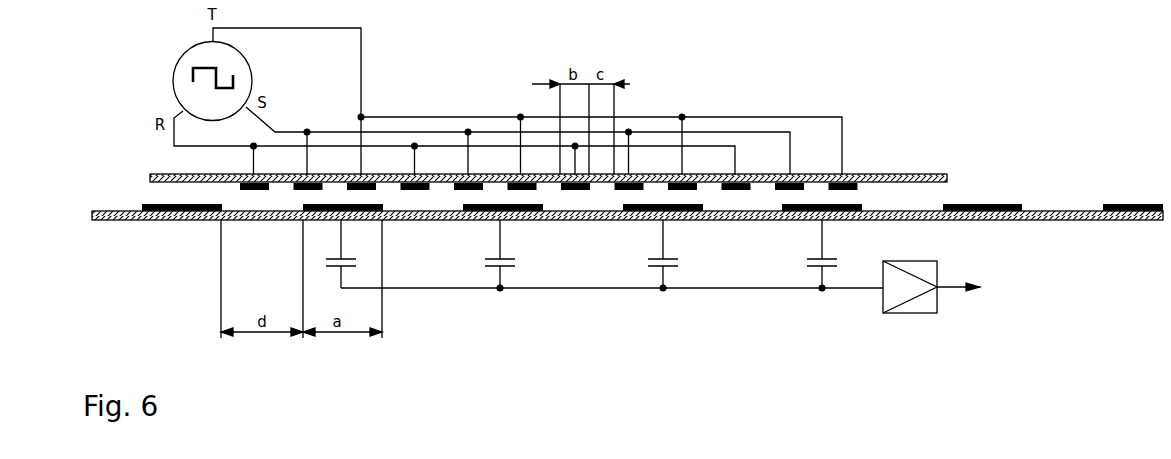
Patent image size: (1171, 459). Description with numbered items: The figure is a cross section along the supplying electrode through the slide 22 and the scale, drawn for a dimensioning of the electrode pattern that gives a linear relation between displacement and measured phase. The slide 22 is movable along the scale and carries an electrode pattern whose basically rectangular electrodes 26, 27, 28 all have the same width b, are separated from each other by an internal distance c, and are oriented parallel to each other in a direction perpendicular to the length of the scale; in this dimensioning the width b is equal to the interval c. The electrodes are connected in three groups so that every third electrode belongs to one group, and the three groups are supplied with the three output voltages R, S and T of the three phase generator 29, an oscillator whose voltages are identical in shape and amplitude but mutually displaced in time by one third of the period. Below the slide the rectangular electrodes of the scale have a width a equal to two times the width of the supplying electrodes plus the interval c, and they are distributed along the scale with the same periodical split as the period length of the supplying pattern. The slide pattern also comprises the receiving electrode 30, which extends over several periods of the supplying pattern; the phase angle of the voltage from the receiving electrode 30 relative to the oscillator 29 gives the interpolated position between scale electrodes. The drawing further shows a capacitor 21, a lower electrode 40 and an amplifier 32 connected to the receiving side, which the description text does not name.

The capacitor 21 is at (505, 260).
The slide 22 is at (918, 180).
The rectangular electrode 26 is at (740, 177).
The rectangular electrode 27 is at (797, 177).
The rectangular electrode 28 is at (847, 177).
The three phase generator 29 is at (238, 70).
The receiving electrode 30 is at (509, 266).
The amplifier 32 is at (916, 310).
The receiving electrode 40 is at (800, 215).